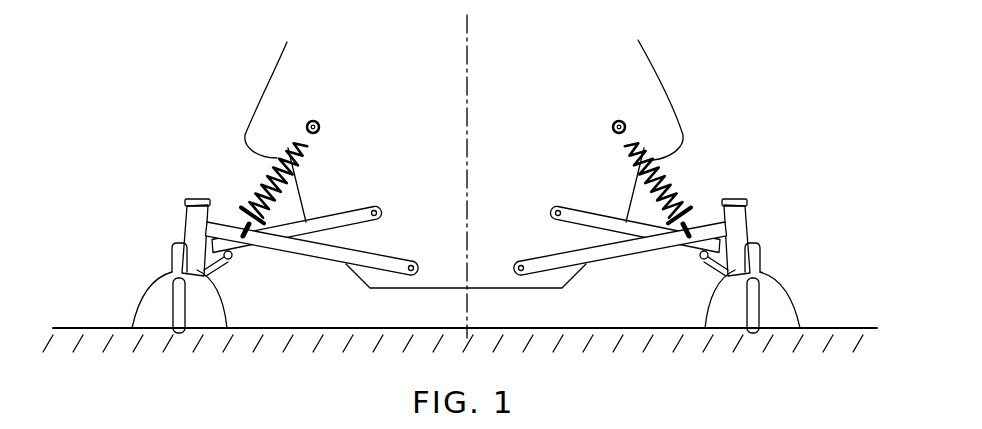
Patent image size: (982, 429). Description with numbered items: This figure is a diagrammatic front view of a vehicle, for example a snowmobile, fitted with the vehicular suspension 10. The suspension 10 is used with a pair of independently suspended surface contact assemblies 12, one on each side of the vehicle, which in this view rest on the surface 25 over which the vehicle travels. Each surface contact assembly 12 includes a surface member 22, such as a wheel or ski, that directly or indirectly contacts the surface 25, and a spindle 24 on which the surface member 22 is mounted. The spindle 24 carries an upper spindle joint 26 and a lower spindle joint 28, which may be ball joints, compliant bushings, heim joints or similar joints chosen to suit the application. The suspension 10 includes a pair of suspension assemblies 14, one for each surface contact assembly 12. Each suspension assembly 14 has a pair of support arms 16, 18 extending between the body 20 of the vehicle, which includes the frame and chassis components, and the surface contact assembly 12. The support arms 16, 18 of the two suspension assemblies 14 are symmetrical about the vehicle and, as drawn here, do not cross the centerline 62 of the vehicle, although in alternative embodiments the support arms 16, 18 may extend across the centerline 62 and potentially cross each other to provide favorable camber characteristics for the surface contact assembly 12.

The vehicular suspension 10 is at (753, 148).
The surface contact assembly 12 is at (133, 253).
The suspension assembly 14 is at (227, 158).
The support arm 16 is at (350, 215).
The support arm 18 is at (361, 257).
The vehicle body 20 is at (297, 77).
The surface member 22 is at (148, 310).
The spindle 24 is at (185, 212).
The surface 25 is at (106, 330).
The upper spindle joint 26 is at (212, 212).
The lower spindle joint 28 is at (203, 272).
The centerline 62 is at (467, 135).